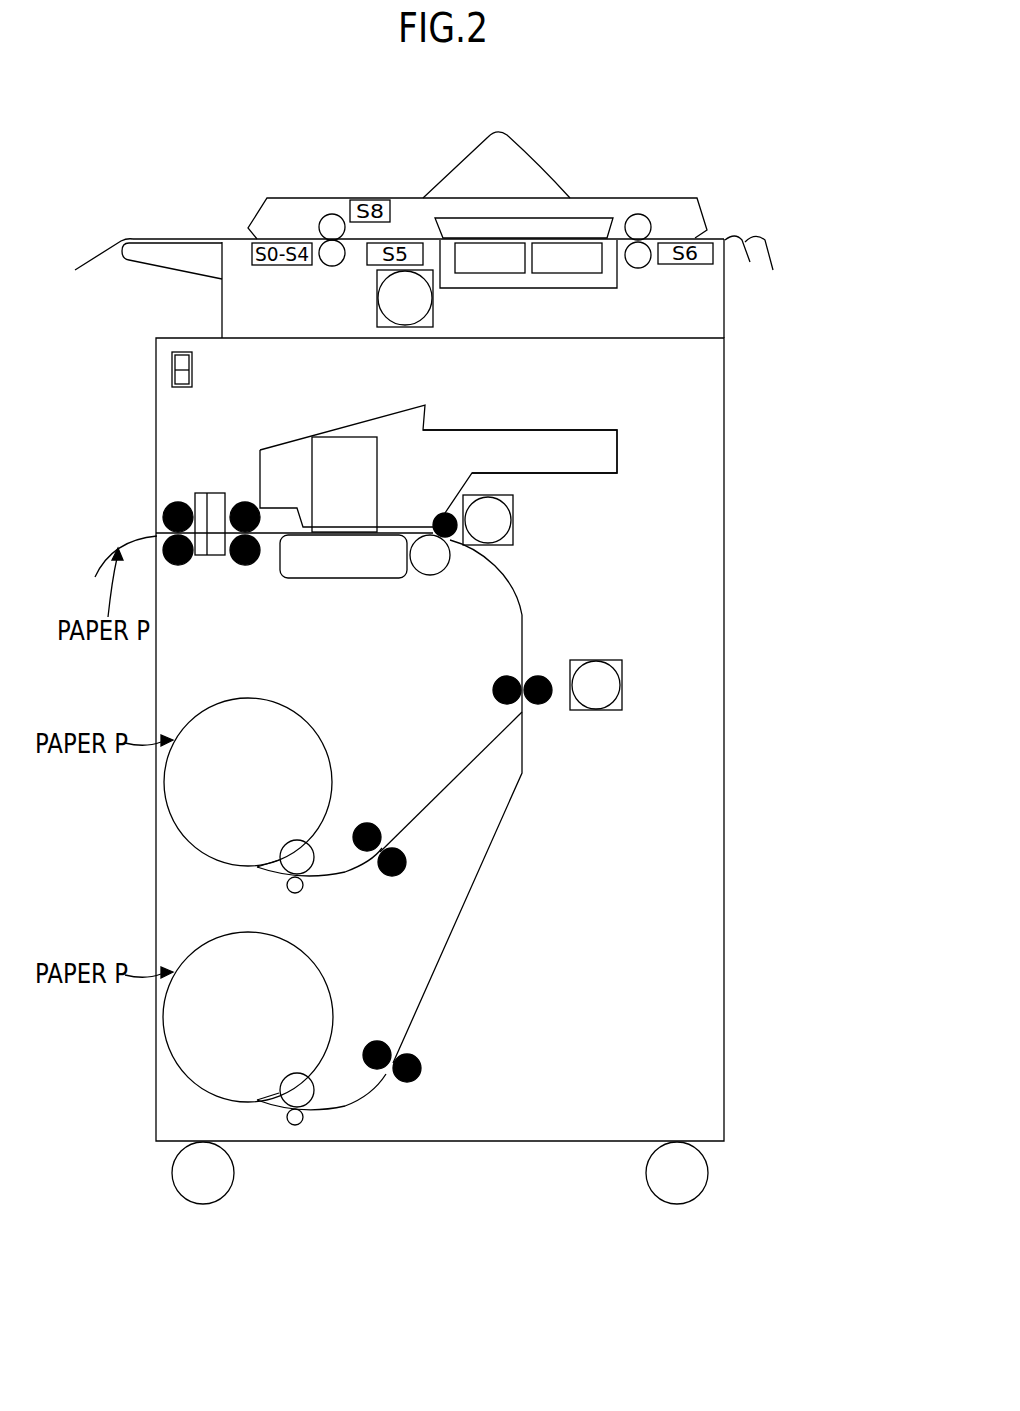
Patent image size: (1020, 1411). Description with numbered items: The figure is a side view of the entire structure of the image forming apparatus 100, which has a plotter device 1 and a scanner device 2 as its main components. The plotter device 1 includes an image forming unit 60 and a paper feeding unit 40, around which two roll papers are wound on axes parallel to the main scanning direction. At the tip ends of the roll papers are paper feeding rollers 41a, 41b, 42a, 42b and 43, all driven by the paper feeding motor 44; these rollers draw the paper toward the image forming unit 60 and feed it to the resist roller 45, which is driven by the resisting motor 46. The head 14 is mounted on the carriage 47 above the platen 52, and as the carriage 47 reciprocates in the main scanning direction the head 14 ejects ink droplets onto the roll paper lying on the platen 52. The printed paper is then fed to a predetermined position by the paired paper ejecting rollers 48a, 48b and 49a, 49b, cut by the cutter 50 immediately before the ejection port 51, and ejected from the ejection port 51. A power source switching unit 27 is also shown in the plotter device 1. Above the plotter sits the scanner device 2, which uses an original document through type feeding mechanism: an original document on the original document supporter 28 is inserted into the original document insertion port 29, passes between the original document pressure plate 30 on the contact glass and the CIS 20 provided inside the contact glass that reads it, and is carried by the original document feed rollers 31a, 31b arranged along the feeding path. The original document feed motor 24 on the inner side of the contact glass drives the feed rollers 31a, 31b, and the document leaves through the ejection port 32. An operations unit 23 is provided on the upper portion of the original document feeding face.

The image forming apparatus 100 is at (230, 112).
The plotter device 1 is at (740, 489).
The scanner device 2 is at (661, 192).
The original document insertion port 29 is at (236, 223).
The operations unit 23 is at (478, 143).
The original document supporter 28 is at (168, 262).
The original document pressure plate 30 is at (432, 222).
The original document feed roller 31a is at (332, 213).
The original document feed roller 31b is at (636, 213).
The ejection port 32 is at (716, 231).
The CIS (contact image sensor) 20 is at (515, 275).
The original document feed motor 24 is at (433, 310).
The power source switching unit 27 is at (172, 358).
The head 14 is at (322, 442).
The carriage 47 is at (390, 420).
The image forming unit 60 is at (574, 424).
The resisting motor 46 is at (513, 518).
The resist roller 45 is at (431, 576).
The platen 52 is at (328, 580).
The paper ejecting roller 48a is at (247, 565).
The paper ejecting roller 48b is at (245, 502).
The paper ejecting roller 49a is at (178, 565).
The paper ejecting roller 49b is at (178, 502).
The cutter 50 is at (215, 492).
The ejection port 51 is at (148, 521).
The paper feeding roller 43 is at (493, 693).
The paper feeding motor 44 is at (622, 685).
The paper feeding unit 40 is at (163, 891).
The paper feeding roller 41a is at (272, 866).
The paper feeding roller 41b is at (272, 1100).
The paper feeding roller 42a is at (386, 878).
The paper feeding roller 42b is at (400, 1085).